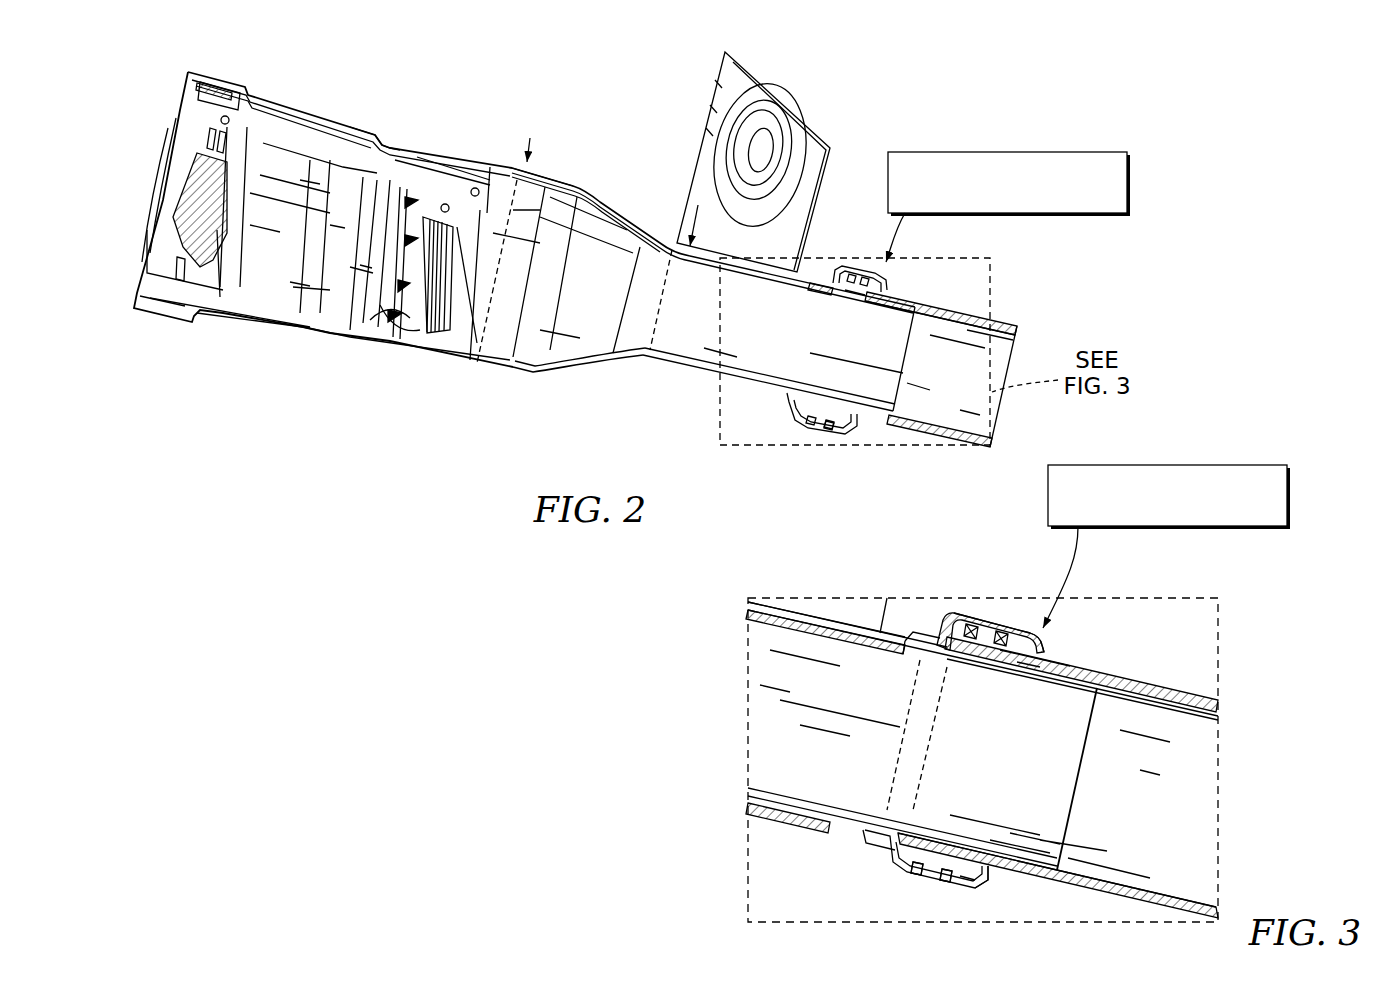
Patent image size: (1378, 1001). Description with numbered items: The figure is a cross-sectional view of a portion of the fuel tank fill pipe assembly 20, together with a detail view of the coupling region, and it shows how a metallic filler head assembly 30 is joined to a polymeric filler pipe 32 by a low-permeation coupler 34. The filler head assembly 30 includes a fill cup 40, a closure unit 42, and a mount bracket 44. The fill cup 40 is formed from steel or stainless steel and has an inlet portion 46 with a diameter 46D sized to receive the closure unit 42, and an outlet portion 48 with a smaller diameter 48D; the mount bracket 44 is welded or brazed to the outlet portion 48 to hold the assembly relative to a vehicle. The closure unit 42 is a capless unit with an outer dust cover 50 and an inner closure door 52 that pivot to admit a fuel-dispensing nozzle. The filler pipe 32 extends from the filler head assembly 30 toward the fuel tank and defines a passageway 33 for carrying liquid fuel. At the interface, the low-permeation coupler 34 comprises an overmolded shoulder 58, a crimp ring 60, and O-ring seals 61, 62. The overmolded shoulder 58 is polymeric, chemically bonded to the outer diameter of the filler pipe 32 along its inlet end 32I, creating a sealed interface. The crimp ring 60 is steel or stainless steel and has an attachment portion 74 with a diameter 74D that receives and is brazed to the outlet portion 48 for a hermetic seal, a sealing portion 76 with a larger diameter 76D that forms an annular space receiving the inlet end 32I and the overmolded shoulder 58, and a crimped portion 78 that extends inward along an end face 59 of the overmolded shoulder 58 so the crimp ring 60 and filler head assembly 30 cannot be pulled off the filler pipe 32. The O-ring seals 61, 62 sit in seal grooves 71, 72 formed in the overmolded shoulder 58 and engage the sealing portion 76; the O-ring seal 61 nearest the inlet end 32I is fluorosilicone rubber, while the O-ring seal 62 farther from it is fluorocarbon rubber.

In FIG. 2, the fuel tank fill pipe assembly 20 is at (990, 120).
In FIG. 2, the filler head assembly 30 is at (322, 345).
In FIG. 2, the filler pipe 32 is at (1012, 318).
In FIG. 3, the filler pipe 32 is at (1198, 680).
In FIG. 2, the inlet end of filler pipe 32I is at (762, 408).
In FIG. 3, the inlet end of filler pipe 32I is at (886, 848).
In FIG. 2, the passageway 33 is at (980, 402).
In FIG. 2, the low-permeation coupler 34 is at (1072, 152).
In FIG. 3, the low-permeation coupler 34 is at (1237, 468).
In FIG. 2, the fill cup 40 is at (562, 175).
In FIG. 3, the fill cup 40 is at (768, 597).
In FIG. 2, the closure unit 42 is at (380, 132).
In FIG. 2, the mount bracket 44 is at (838, 160).
In FIG. 2, the inlet portion 46 is at (490, 158).
In FIG. 2, the diameter of inlet portion 46D is at (473, 370).
In FIG. 2, the outlet portion 48 is at (710, 249).
In FIG. 3, the outlet portion 48 is at (805, 612).
In FIG. 2, the diameter of outlet portion 48D is at (655, 365).
In FIG. 2, the outer dust cover 50 is at (188, 190).
In FIG. 2, the inner closure door 52 is at (365, 290).
In FIG. 2, the overmolded shoulder 58 is at (852, 304).
In FIG. 3, the overmolded shoulder 58 is at (1018, 664).
In FIG. 3, the end face of overmolded shoulder 59 is at (985, 876).
In FIG. 2, the crimp ring 60 is at (853, 263).
In FIG. 3, the crimp ring 60 is at (1011, 616).
In FIG. 2, the O-ring seal 61 is at (805, 435).
In FIG. 3, the O-ring seal 61 is at (908, 870).
In FIG. 2, the O-ring seal 62 is at (829, 437).
In FIG. 3, the O-ring seal 62 is at (940, 887).
In FIG. 3, the seal groove 71 is at (917, 877).
In FIG. 3, the seal groove 72 is at (975, 882).
In FIG. 3, the attachment portion 74 is at (920, 627).
In FIG. 3, the diameter of attachment portion 74D is at (898, 745).
In FIG. 3, the sealing portion 76 is at (989, 612).
In FIG. 3, the diameter of sealing portion 76D is at (933, 735).
In FIG. 3, the crimped portion 78 is at (1060, 648).